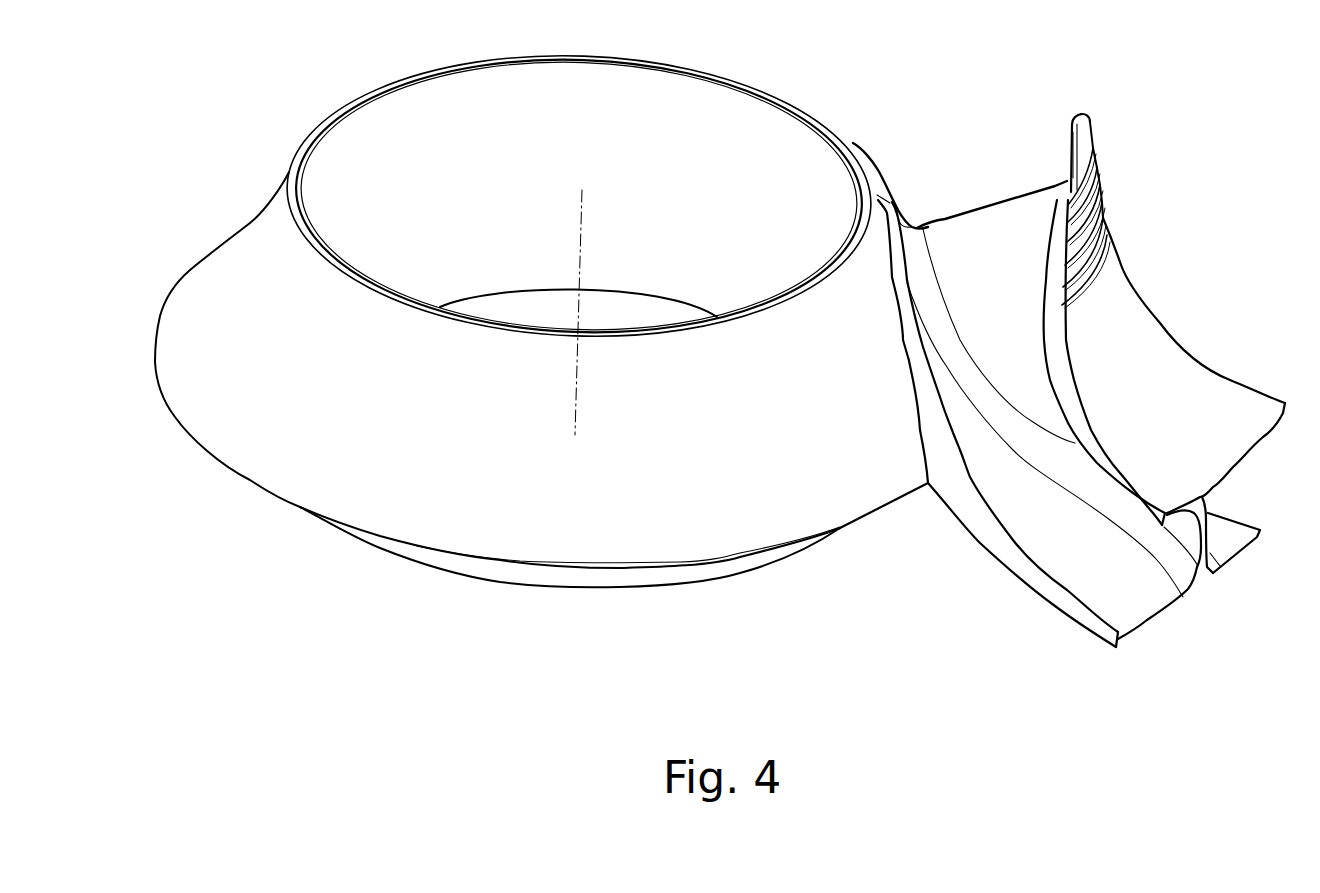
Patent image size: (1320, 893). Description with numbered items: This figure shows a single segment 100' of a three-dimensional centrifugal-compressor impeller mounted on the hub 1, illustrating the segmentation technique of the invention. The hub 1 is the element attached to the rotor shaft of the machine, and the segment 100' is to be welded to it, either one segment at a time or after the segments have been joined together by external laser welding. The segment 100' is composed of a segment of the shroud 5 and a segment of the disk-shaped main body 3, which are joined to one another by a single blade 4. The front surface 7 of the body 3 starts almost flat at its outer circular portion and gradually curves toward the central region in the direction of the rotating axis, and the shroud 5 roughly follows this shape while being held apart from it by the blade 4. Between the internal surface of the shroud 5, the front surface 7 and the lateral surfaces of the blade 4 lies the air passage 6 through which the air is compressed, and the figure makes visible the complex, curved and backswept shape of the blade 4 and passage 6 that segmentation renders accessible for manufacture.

The hub 1 is at (277, 423).
The main body 3 is at (1035, 578).
The blade 4 is at (990, 268).
The shroud 5 is at (1138, 377).
The air passage 6 is at (1110, 582).
The front surface 7 is at (970, 477).
The segment 100' is at (1160, 283).